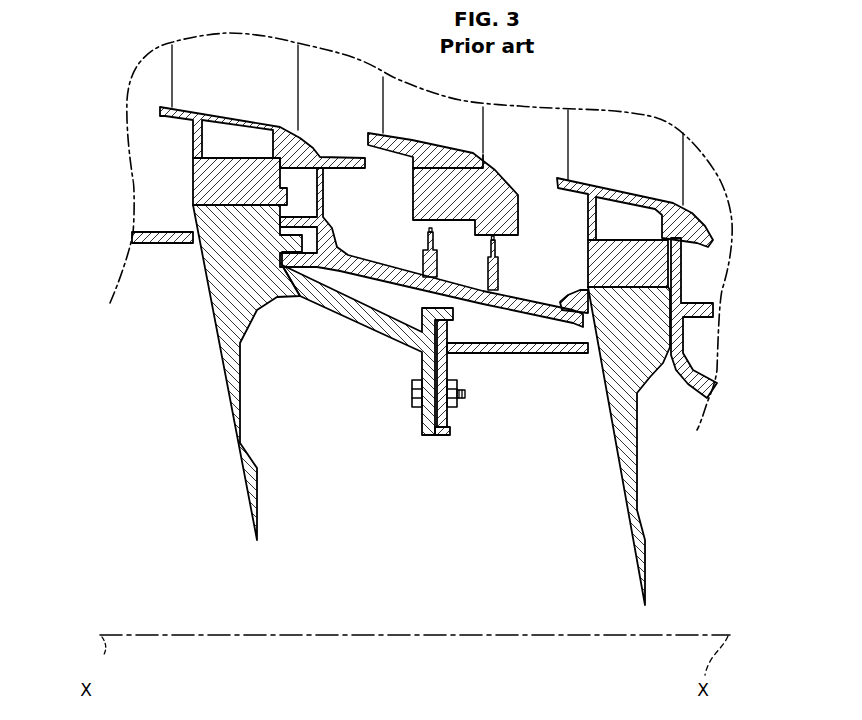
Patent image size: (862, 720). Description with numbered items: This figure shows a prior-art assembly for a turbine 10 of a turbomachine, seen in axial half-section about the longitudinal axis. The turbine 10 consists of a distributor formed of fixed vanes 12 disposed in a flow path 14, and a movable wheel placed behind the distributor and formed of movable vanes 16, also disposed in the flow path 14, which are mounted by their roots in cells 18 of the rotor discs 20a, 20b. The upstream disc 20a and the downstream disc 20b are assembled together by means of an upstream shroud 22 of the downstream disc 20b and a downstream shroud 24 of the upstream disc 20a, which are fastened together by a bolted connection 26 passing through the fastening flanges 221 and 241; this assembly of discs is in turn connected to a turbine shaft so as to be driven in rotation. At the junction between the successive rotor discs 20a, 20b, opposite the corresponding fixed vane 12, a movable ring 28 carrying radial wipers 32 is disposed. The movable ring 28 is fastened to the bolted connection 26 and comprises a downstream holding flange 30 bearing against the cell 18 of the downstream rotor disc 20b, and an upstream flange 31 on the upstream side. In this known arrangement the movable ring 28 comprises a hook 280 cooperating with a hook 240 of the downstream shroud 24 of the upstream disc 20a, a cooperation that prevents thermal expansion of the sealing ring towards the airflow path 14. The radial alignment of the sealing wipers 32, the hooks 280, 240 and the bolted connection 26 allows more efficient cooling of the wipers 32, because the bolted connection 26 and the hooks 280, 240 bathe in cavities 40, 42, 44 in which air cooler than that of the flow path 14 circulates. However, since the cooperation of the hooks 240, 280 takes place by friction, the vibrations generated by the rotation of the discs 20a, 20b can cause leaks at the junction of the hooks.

The turbine 10 is at (800, 465).
The fixed vanes 12 is at (417, 126).
The flow path 14 is at (328, 98).
The movable vanes 16 is at (220, 87).
The cells 18 is at (227, 195).
The upstream disc 20a is at (322, 440).
The downstream disc 20b is at (564, 440).
The upstream shroud 22 is at (531, 354).
The downstream shroud 24 is at (330, 308).
The bolted connection 26 is at (406, 397).
The movable ring 28 is at (376, 208).
The downstream holding flange 30 is at (540, 306).
The upstream flange 31 is at (383, 270).
The radial wipers 32 is at (497, 273).
The cavity 40 is at (421, 523).
The cavity 42 is at (484, 336).
The cavity 44 is at (338, 300).
The fastening flange 221 is at (451, 418).
The hook 240 is at (440, 309).
The fastening flange 241 is at (428, 436).
The hook 280 is at (443, 328).